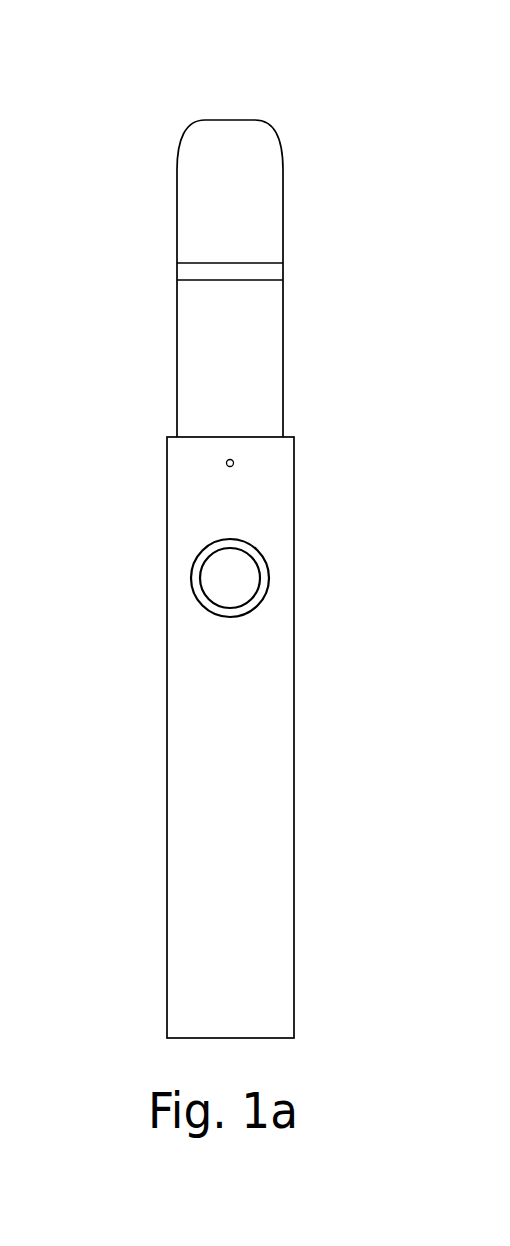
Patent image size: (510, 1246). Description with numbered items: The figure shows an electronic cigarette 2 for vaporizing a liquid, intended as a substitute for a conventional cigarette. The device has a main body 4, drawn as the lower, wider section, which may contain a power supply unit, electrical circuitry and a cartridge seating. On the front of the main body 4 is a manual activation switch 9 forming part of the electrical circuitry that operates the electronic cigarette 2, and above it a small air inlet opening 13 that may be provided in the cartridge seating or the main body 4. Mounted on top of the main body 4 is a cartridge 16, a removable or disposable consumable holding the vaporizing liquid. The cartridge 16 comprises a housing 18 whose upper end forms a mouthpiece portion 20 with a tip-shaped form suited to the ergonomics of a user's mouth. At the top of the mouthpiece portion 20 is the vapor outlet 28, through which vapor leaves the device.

The electronic cigarette 2 is at (214, 528).
The main body 4 is at (207, 737).
The manual activation switch 9 is at (232, 578).
The air inlet opening 13 is at (225, 462).
The cartridge 16 is at (236, 230).
The housing 18 is at (283, 318).
The mouthpiece portion 20 is at (185, 143).
The vapor outlet 28 is at (223, 128).